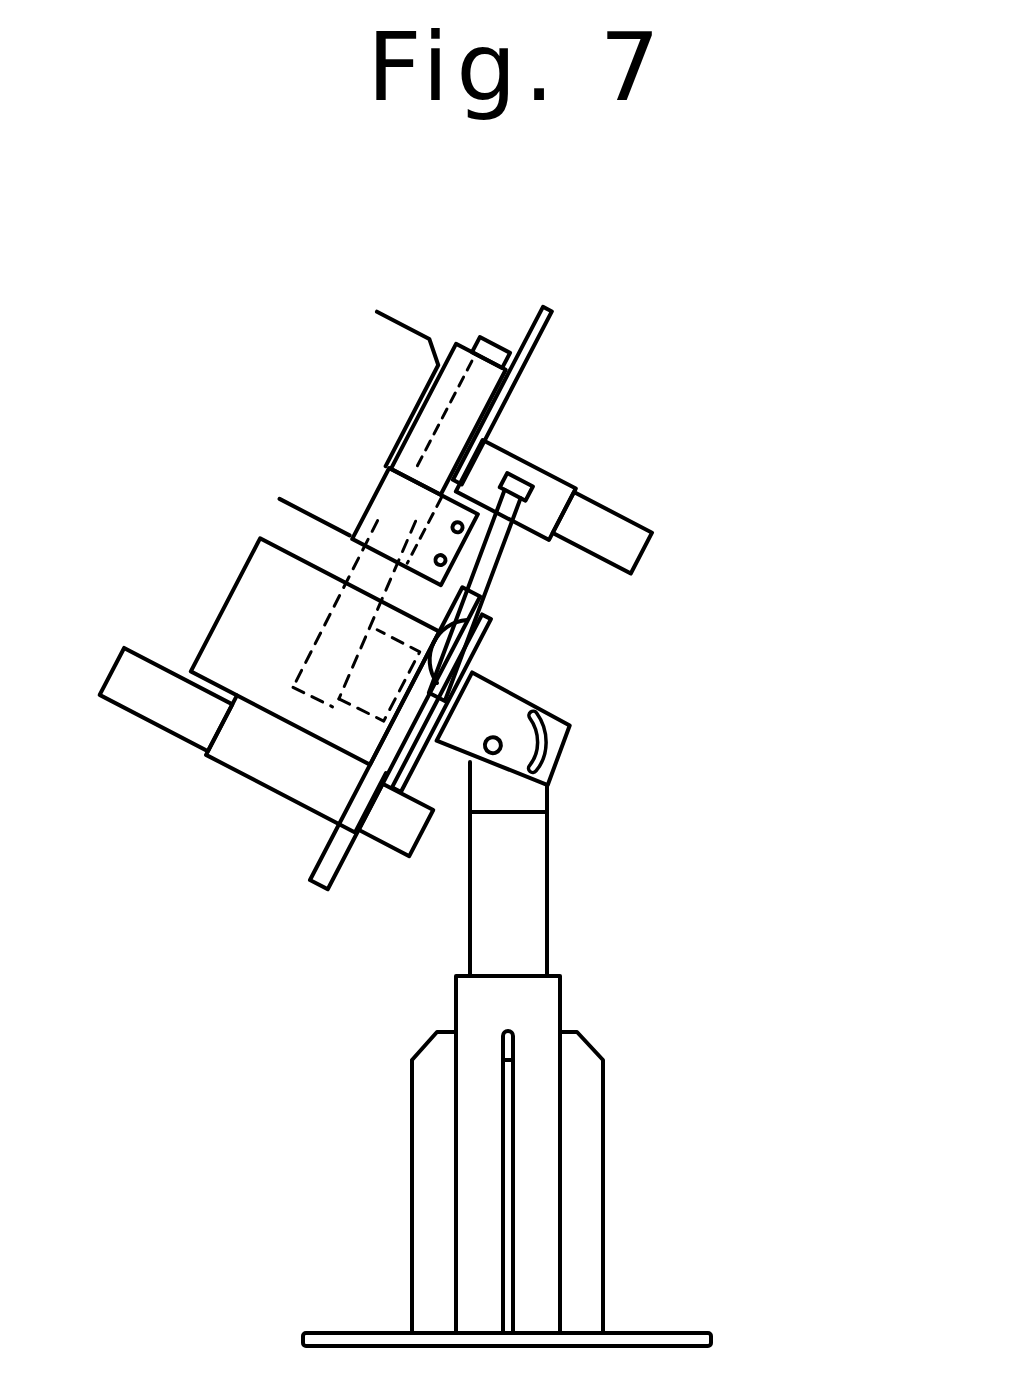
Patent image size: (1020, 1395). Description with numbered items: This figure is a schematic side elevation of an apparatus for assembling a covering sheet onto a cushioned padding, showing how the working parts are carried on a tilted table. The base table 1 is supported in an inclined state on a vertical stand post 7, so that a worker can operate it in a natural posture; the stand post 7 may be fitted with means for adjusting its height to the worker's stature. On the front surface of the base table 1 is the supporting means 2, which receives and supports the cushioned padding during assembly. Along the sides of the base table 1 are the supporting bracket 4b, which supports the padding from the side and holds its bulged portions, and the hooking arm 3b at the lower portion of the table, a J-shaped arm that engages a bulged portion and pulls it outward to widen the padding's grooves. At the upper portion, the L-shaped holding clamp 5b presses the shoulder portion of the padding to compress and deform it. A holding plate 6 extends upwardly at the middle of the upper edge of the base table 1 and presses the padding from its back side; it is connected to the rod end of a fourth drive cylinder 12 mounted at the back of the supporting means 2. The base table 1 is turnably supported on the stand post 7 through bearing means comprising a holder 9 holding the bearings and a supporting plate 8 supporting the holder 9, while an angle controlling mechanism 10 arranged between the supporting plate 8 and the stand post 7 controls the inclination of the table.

The base table 1 is at (350, 860).
The supporting means 2 is at (485, 348).
The hooking arm 3b is at (163, 712).
The supporting bracket 4b is at (242, 598).
The holding clamp 5b is at (355, 365).
The holding plate 6 is at (550, 330).
The stand post 7 is at (530, 868).
The supporting plate 8 is at (428, 772).
The holder 9 is at (468, 618).
The angle controlling mechanism 10 is at (565, 735).
The fourth drive cylinder 12 is at (520, 448).